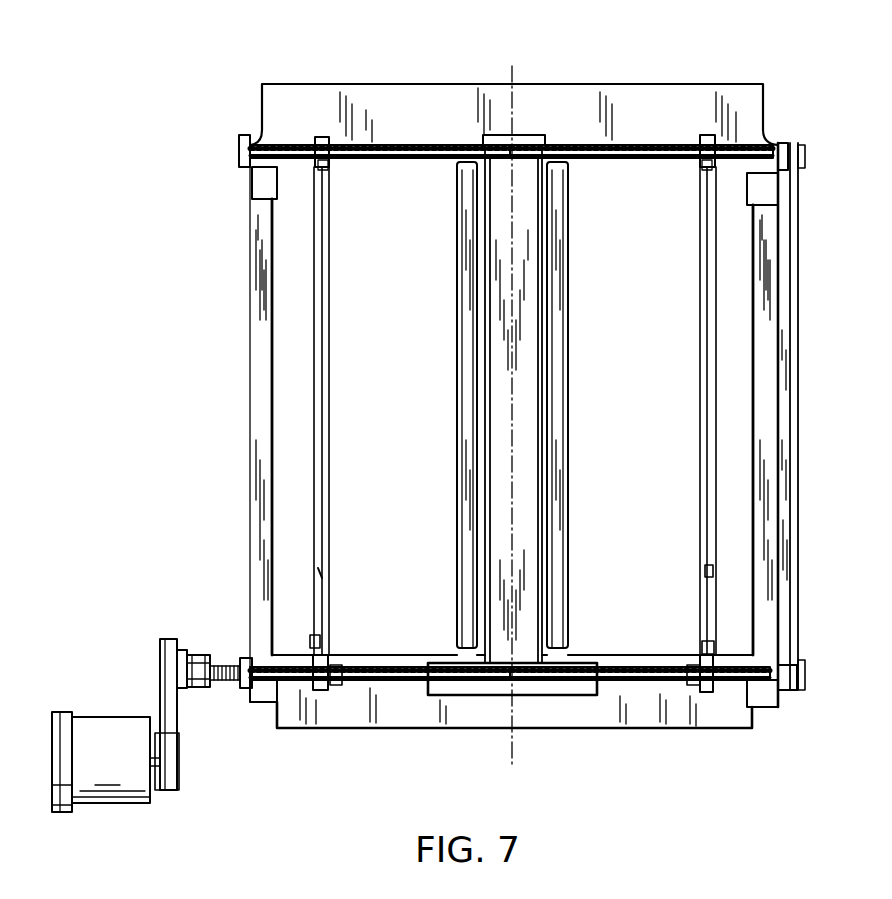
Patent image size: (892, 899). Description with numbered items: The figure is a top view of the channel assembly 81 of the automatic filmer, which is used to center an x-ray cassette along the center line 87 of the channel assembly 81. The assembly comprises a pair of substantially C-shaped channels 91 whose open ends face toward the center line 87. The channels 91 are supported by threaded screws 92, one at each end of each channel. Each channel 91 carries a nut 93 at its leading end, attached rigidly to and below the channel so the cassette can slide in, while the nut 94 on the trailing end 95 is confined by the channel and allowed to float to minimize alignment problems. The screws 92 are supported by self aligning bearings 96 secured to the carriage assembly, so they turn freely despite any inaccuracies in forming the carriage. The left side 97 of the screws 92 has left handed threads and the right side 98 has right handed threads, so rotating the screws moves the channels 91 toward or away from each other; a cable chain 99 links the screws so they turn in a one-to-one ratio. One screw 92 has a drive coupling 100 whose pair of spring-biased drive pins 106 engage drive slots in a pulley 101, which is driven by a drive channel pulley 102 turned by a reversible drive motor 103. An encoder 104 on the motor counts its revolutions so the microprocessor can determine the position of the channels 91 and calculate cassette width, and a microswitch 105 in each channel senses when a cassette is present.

The channel assembly 81 is at (678, 47).
The center line 87 is at (514, 80).
The channel 91 is at (330, 490).
The threaded screw 92 is at (530, 142).
The nut 93 is at (324, 692).
The nut 94 is at (320, 137).
The trailing end 95 is at (329, 166).
The self aligning bearing 96 is at (243, 165).
The left side 97 is at (447, 146).
The right side 98 is at (643, 146).
The cable chain 99 is at (794, 335).
The drive coupling 100 is at (194, 656).
The pulley 101 is at (160, 645).
The drive channel pulley 102 is at (178, 782).
The drive motor 103 is at (96, 736).
The encoder 104 is at (60, 812).
The microswitch 105 is at (322, 574).
The drive pin 106 is at (183, 652).